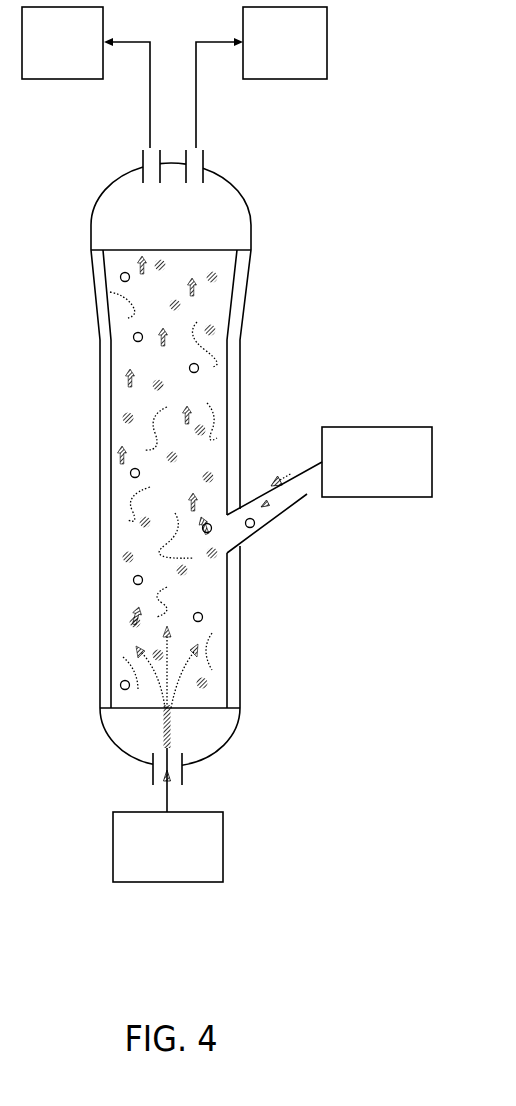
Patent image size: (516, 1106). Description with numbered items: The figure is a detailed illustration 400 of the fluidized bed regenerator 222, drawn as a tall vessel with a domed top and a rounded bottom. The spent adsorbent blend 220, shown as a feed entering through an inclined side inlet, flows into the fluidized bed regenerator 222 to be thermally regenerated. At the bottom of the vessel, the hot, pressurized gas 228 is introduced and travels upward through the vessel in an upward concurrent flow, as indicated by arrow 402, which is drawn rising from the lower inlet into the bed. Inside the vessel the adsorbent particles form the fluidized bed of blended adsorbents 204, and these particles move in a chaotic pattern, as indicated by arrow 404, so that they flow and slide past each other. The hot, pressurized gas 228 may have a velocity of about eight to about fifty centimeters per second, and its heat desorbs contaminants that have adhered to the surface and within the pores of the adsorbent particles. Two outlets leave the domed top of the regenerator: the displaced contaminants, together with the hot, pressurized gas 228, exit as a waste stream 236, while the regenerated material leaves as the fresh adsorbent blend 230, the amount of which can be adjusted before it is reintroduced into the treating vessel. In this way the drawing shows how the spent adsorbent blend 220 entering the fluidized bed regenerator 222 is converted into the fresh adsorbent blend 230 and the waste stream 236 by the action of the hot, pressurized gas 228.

The detailed illustration 400 is at (190, 1015).
The arrow 402 is at (111, 600).
The arrow 404 is at (110, 292).
The fluidized bed of blended adsorbents 204 is at (231, 308).
The fluidized bed regenerator 222 is at (233, 187).
The spent adsorbent blend 220 is at (359, 476).
The hot, pressurized gas 228 is at (150, 858).
The fresh adsorbent blend 230 is at (268, 58).
The waste stream 236 is at (45, 58).